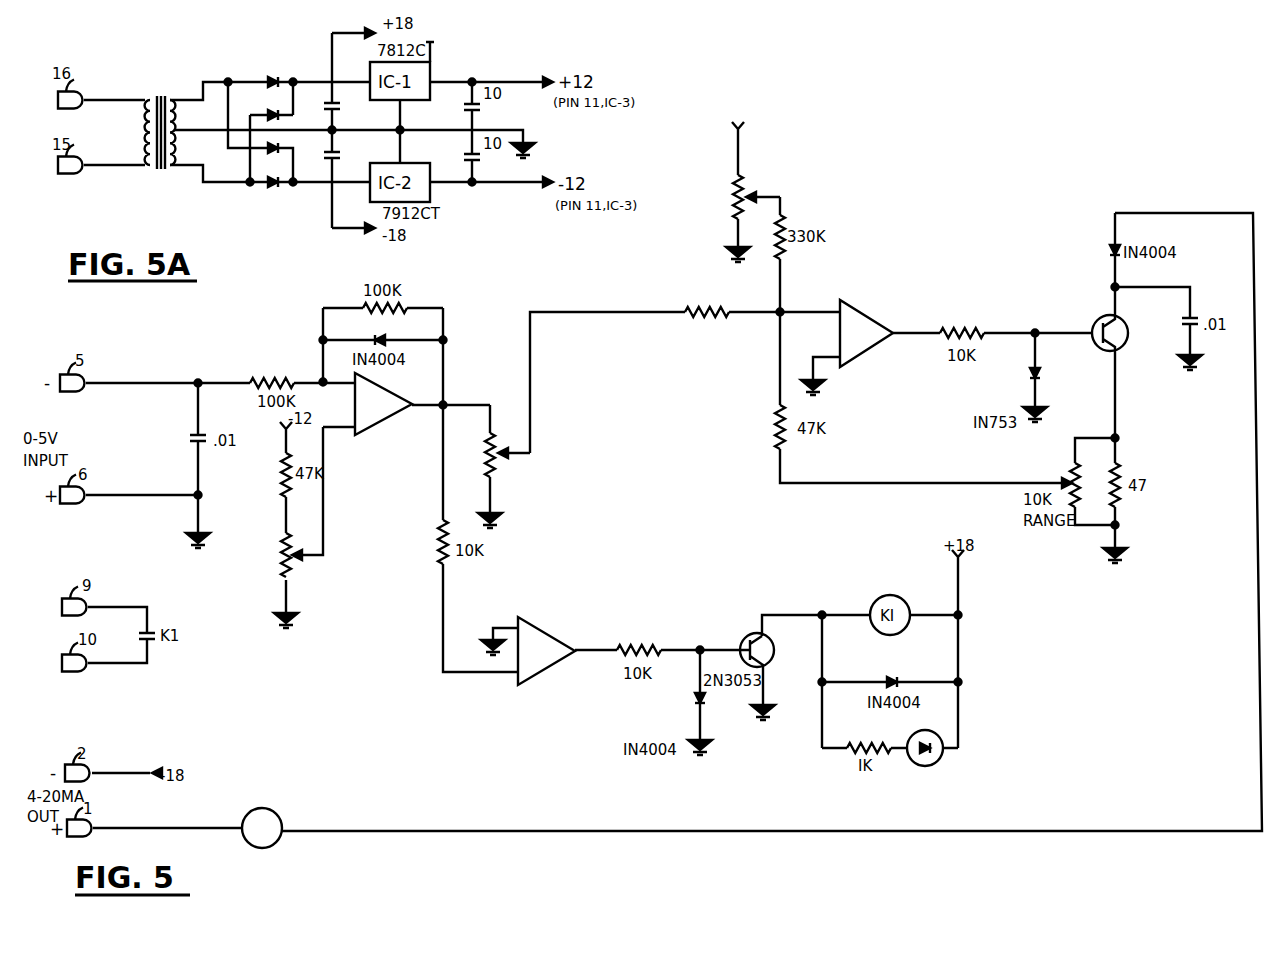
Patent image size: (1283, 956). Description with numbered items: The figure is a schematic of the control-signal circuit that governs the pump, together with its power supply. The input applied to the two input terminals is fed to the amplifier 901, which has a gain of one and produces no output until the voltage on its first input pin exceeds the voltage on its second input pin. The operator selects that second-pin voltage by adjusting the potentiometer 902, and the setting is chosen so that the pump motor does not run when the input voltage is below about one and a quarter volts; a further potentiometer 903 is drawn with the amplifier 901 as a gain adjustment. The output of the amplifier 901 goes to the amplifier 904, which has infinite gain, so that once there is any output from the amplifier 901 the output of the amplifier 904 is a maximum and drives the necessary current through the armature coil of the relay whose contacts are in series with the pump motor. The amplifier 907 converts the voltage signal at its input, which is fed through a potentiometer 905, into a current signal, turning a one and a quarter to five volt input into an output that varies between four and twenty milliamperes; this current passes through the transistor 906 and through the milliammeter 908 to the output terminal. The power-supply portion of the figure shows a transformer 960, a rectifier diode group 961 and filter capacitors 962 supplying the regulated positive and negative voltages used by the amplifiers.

In FIG. 5, the amplifier 901 is at (380, 430).
In FIG. 5, the potentiometer 902 is at (279, 571).
In FIG. 5, the gain potentiometer 903 is at (505, 478).
In FIG. 5, the amplifier 904 is at (572, 624).
In FIG. 5, the potentiometer 905 is at (755, 173).
In FIG. 5, the transistor 906 is at (1097, 318).
In FIG. 5, the amplifier 907 is at (872, 313).
In FIG. 5, the milliammeter 908 is at (277, 810).
In FIG. 5A, the transformer 960 is at (147, 100).
In FIG. 5A, the diode bridge 961 is at (248, 173).
In FIG. 5A, the filter capacitors 962 is at (322, 173).